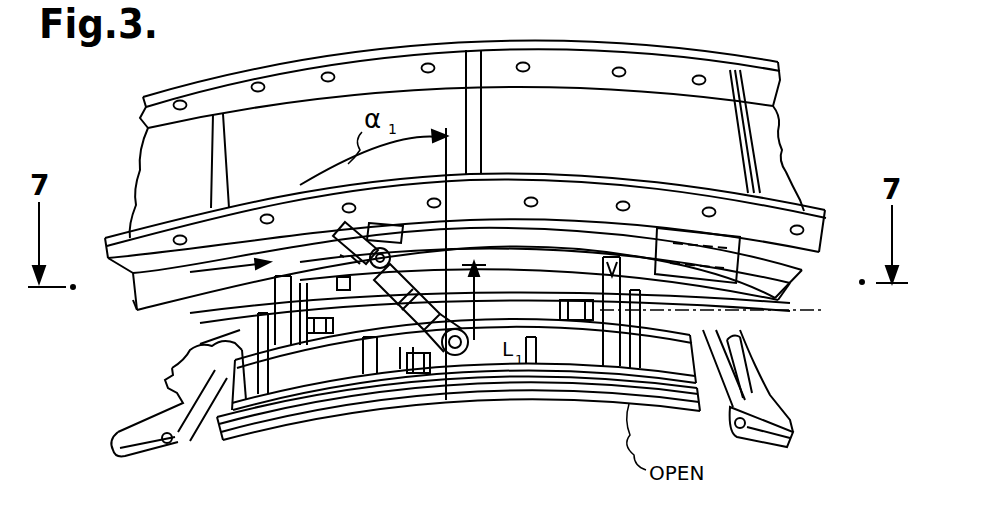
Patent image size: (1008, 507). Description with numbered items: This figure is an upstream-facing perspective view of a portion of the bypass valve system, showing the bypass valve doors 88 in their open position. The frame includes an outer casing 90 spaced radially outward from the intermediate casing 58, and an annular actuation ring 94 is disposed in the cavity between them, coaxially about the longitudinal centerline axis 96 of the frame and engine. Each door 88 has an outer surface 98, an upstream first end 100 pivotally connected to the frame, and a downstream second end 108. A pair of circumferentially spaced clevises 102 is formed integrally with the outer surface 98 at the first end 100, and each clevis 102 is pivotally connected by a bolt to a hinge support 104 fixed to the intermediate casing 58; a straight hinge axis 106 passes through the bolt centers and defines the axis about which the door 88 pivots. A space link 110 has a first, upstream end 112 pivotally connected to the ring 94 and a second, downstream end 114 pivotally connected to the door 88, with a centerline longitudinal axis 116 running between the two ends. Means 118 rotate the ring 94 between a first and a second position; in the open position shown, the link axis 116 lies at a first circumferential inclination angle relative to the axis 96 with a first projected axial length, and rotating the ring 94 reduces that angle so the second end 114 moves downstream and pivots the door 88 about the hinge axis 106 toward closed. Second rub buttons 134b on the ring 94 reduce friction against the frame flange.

The outer casing 90 is at (790, 126).
The annular actuation ring 94 is at (127, 283).
The hinge support 104 is at (220, 297).
The intermediate casing 58 is at (785, 285).
The hinge axis 106 is at (822, 313).
The second rub buttons 134b is at (680, 244).
The longitudinal centerline axis 96 is at (447, 157).
The first end 112 is at (370, 218).
The centerline longitudinal axis 116 is at (352, 256).
The second end 114 is at (446, 400).
The outer surface 98 is at (345, 368).
The space link 110 is at (392, 375).
The door 88 is at (493, 400).
The second end 108 is at (240, 404).
The first end 100 is at (200, 344).
The clevis 102 is at (207, 369).
The means for rotating 118 is at (117, 313).